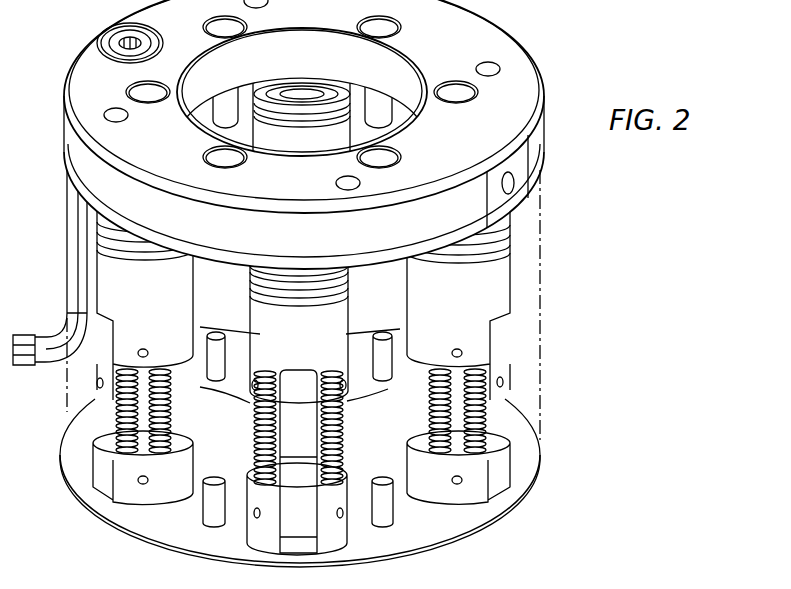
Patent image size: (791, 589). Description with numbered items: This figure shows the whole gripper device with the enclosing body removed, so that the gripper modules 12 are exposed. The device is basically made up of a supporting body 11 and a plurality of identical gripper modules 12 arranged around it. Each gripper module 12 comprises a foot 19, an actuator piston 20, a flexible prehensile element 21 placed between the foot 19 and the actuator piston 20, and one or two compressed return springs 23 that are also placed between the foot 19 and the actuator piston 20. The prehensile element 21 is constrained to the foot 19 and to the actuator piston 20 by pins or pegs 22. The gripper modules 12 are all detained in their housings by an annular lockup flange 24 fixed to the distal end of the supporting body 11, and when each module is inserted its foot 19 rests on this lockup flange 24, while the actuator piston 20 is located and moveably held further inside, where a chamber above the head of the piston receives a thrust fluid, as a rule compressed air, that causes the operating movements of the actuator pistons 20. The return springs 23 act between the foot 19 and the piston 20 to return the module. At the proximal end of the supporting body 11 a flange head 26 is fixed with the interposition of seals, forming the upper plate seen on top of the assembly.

The flange head 26 is at (518, 65).
The supporting body 11 is at (540, 223).
The gripper module 12 is at (523, 280).
The actuator piston 20 is at (500, 292).
The pins or pegs 22 is at (462, 353).
The compressed return spring 23 is at (507, 393).
The annular lockup flange 24 is at (538, 460).
The foot 19 is at (477, 503).
The flexible prehensile element 21 is at (425, 383).